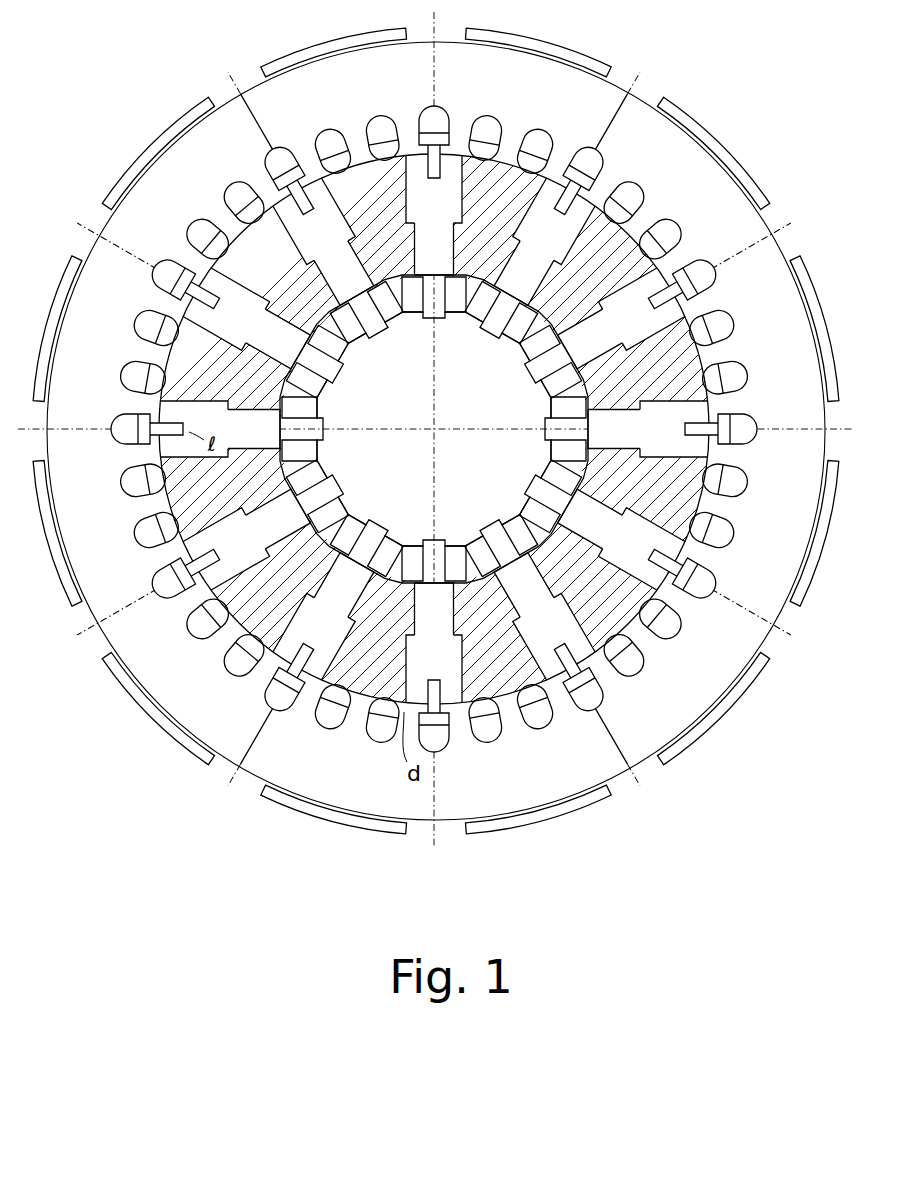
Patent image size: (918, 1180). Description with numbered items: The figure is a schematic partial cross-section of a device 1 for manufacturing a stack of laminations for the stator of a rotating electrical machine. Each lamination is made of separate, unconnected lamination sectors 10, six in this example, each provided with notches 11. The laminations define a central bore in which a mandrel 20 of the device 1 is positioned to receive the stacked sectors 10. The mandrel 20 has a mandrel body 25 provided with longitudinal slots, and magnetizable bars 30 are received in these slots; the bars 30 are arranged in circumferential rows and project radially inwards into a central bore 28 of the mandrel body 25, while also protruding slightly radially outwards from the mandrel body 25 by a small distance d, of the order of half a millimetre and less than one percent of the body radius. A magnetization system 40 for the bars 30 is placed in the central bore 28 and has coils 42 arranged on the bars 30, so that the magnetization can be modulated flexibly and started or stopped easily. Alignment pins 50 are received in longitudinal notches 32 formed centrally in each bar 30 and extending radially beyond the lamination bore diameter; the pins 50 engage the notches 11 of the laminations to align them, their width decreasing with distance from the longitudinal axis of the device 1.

The device 1 is at (732, 84).
The lamination sectors 10 is at (511, 104).
The notches 11 is at (134, 364).
The mandrel 20 is at (382, 256).
The mandrel body 25 is at (208, 386).
The central bore 28 is at (389, 422).
The bars 30 is at (434, 429).
The longitudinal notches 32 is at (243, 514).
The magnetization system 40 is at (333, 461).
The coils 42 is at (521, 343).
The alignment pins 50 is at (198, 284).